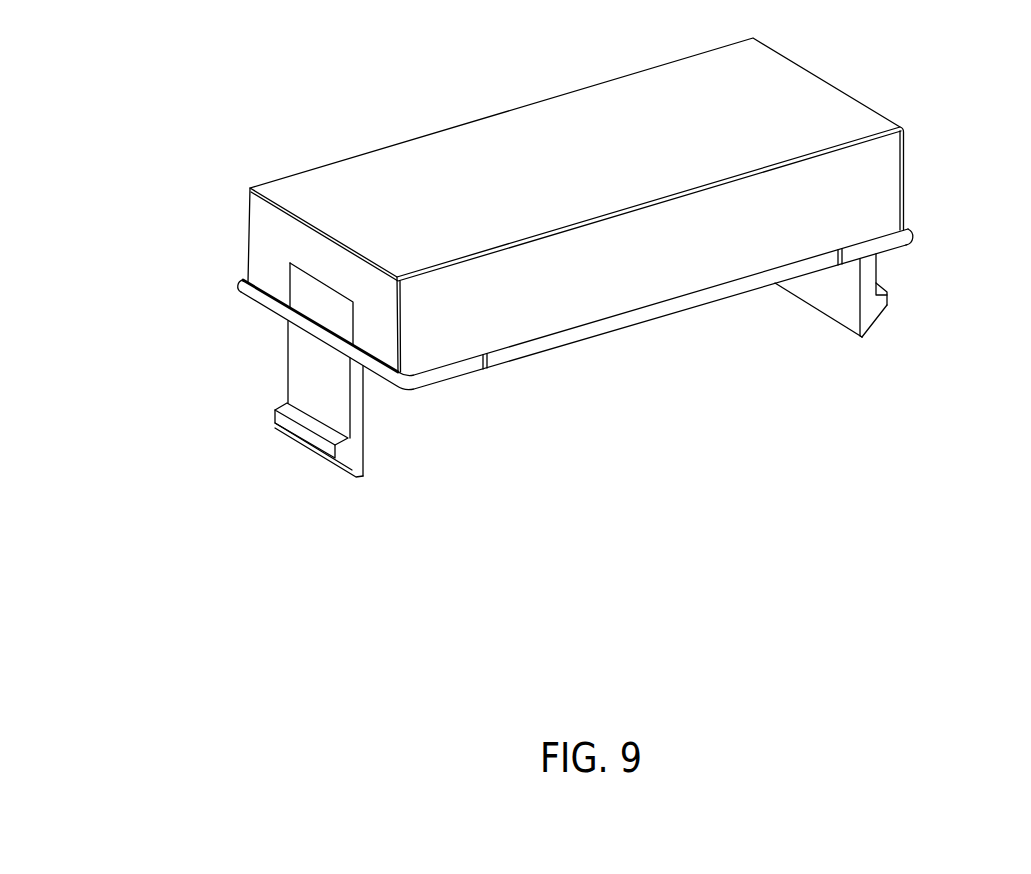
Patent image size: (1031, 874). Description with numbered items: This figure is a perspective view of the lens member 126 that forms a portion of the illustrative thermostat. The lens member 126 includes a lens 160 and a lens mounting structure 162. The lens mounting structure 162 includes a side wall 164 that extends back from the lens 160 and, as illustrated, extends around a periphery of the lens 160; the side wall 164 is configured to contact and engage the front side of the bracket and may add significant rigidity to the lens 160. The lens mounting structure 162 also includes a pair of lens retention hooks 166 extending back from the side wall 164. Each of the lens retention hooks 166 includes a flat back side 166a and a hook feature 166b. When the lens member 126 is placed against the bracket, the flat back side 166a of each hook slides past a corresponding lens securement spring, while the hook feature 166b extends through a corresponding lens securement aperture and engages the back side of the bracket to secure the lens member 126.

The lens member 126 is at (496, 66).
The lens 160 is at (603, 172).
The lens mounting structure 162 is at (227, 324).
The side wall 164 is at (676, 267).
The lens retention hooks 166 is at (579, 372).
The flat back side 166a is at (365, 421).
The hook feature 166b is at (258, 431).